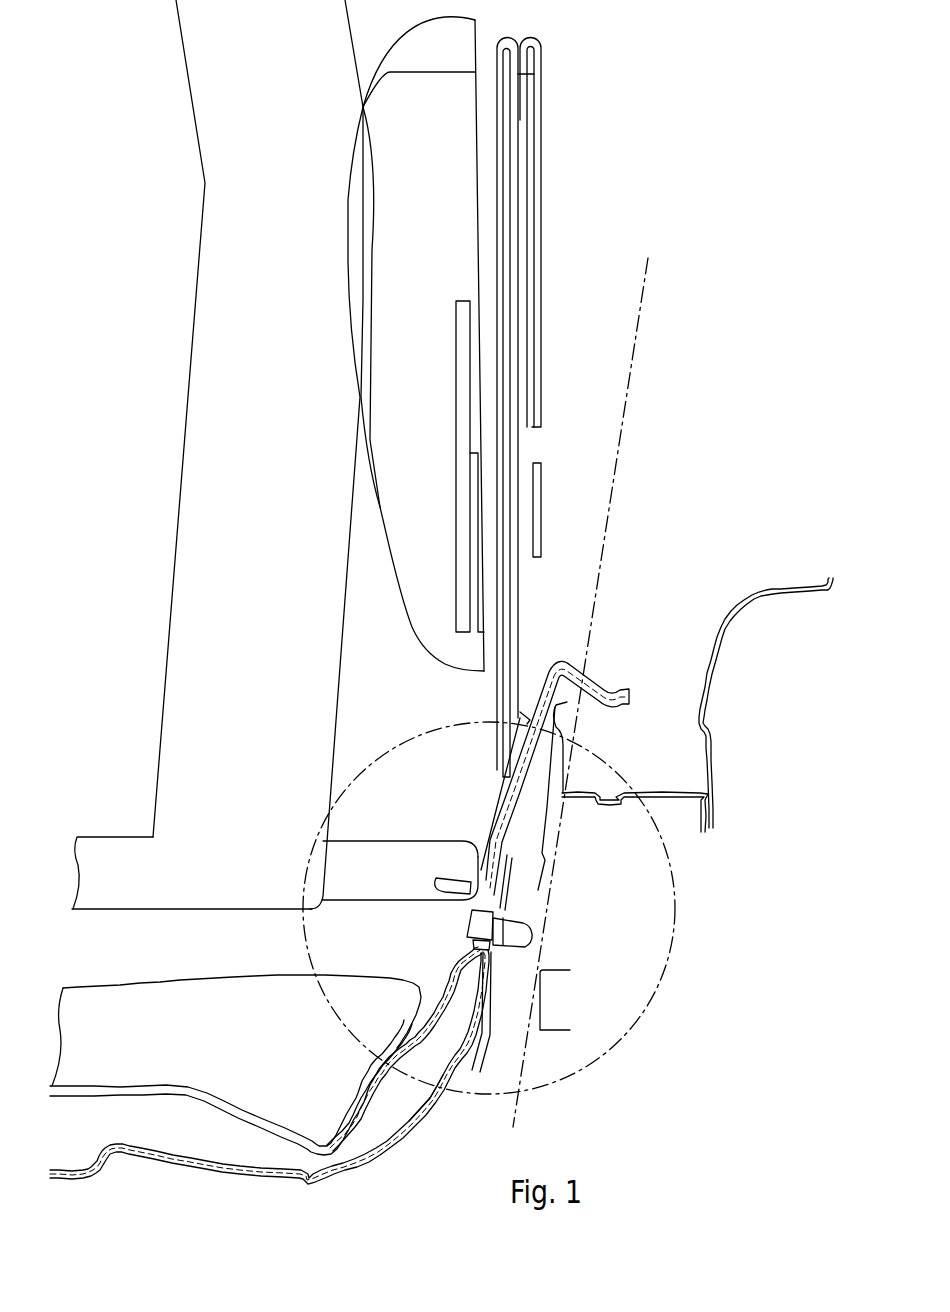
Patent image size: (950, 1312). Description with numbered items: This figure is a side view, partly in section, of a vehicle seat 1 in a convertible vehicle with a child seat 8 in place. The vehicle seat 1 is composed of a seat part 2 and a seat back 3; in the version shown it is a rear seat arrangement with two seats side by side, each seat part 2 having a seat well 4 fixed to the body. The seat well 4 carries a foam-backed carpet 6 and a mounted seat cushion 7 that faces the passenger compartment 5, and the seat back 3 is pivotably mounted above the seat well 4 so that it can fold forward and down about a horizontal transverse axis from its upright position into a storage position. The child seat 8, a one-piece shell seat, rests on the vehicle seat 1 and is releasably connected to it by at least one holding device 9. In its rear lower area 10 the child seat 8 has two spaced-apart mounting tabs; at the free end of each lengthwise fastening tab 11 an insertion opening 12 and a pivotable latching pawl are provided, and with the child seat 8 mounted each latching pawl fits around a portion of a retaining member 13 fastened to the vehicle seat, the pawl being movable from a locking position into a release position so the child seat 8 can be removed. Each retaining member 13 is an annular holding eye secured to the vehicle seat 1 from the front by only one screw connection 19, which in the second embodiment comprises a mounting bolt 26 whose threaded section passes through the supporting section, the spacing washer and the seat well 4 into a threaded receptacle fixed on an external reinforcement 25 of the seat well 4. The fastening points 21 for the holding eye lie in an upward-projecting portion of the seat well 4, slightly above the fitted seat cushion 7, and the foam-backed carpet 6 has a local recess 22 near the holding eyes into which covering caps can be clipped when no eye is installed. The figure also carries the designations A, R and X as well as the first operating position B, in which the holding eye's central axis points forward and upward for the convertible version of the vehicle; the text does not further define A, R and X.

The vehicle seat 1 is at (115, 978).
The seat part 2 is at (160, 1170).
The seat back 3 is at (338, 262).
The seat well 4 is at (437, 1100).
The passenger compartment 5 is at (107, 591).
The foam-backed carpet 6 is at (538, 800).
The seat cushion 7 is at (290, 1010).
The child seat 8 is at (173, 500).
The holding device 9 is at (420, 838).
The rear lower area 10 is at (322, 915).
The fastening tab 11 is at (360, 856).
The insertion opening 12 is at (475, 880).
The retaining member 13 is at (450, 950).
The screw connection 19 is at (455, 917).
The fastening point 21 is at (508, 965).
The recess 22 is at (445, 928).
The external reinforcement 25 is at (486, 1047).
The mounting bolt 26 is at (522, 929).
The direction arrow A is at (480, 18).
The first operating position B is at (449, 863).
The rotation axis R is at (649, 246).
The enlarged detail X is at (647, 1013).